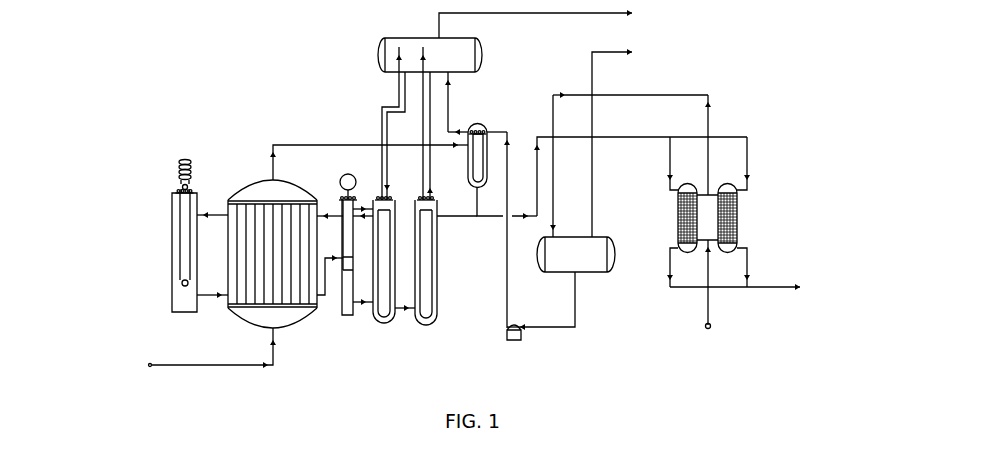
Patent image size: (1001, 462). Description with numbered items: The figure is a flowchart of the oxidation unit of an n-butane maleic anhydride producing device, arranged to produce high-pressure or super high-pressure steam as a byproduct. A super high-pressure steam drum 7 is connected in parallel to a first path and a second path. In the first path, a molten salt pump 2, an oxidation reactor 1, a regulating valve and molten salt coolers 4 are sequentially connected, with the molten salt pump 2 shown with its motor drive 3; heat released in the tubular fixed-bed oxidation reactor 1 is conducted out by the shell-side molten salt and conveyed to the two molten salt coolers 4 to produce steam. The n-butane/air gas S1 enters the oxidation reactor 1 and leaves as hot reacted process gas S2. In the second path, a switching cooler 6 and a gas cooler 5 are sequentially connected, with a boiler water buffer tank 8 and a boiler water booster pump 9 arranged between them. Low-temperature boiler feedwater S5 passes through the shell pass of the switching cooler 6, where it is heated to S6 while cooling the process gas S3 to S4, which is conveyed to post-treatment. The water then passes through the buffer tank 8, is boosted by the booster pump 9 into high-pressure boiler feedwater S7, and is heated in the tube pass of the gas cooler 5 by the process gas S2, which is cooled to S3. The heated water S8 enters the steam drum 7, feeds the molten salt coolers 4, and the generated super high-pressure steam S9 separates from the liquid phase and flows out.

The oxidation reactor 1 is at (272, 266).
The molten salt pump 2 is at (193, 236).
The molten salt circulating pump 3 is at (345, 263).
The molten salt coolers 4 is at (425, 199).
The gas cooler 5 is at (492, 170).
The switching cooler 6 is at (708, 236).
The super high-pressure steam drum 7 is at (436, 55).
The boiler water buffer tank 8 is at (671, 160).
The boiler water booster pump 9 is at (541, 312).
The gas entering the oxidation reactor S1 is at (149, 349).
The process gas after the reaction S2 is at (370, 154).
The cooled reacted process gas S3 is at (642, 170).
The cooled reacted process gas S4 is at (806, 288).
The boiler feedwater S5 is at (722, 295).
The heated boiler feedwater S6 is at (716, 145).
The high-pressure boiler feedwater S7 is at (498, 230).
The heated high-pressure boiler feedwater S8 is at (455, 102).
The byproduct super high-pressure steam S9 is at (646, 20).